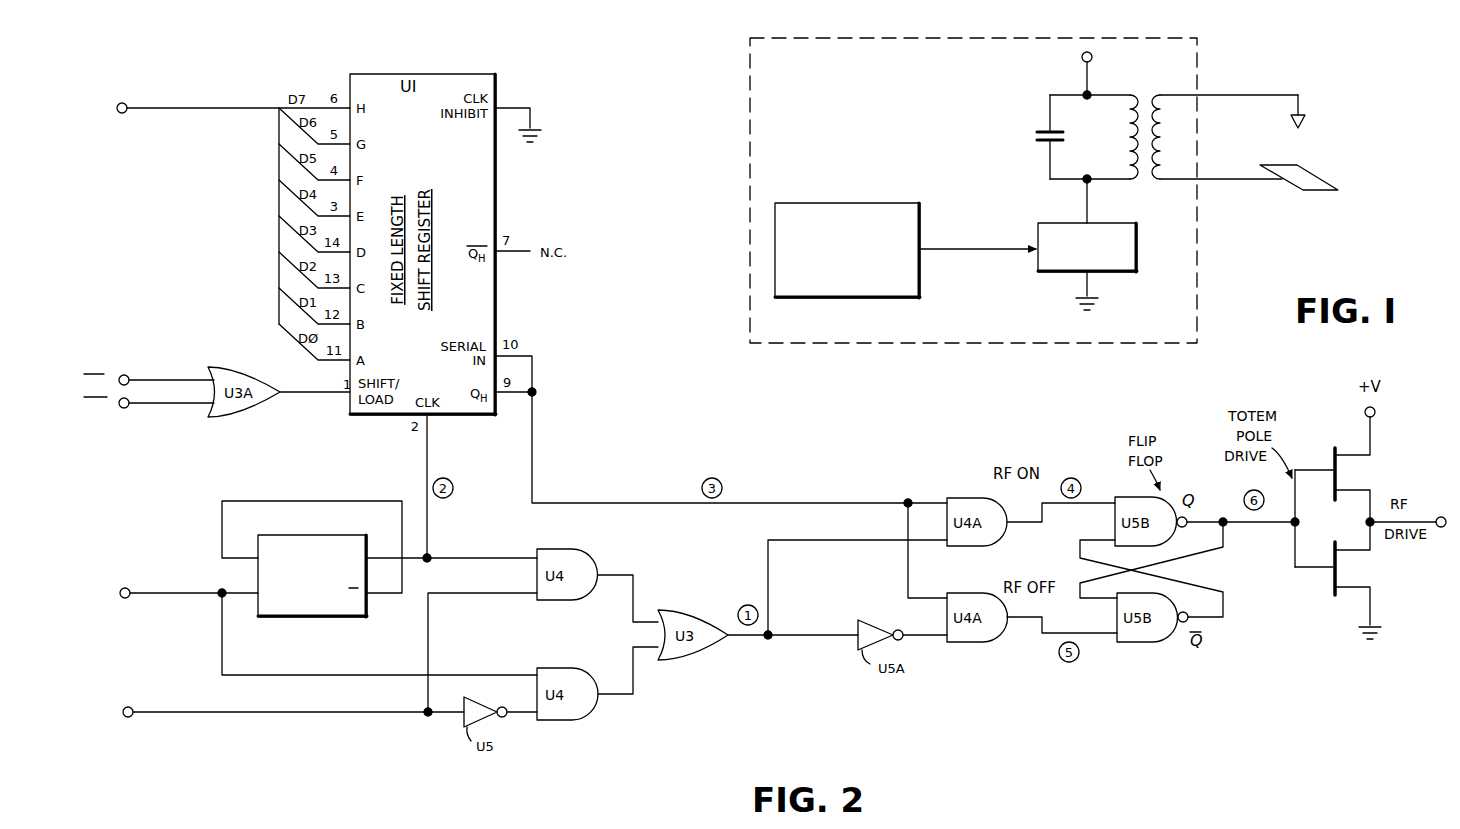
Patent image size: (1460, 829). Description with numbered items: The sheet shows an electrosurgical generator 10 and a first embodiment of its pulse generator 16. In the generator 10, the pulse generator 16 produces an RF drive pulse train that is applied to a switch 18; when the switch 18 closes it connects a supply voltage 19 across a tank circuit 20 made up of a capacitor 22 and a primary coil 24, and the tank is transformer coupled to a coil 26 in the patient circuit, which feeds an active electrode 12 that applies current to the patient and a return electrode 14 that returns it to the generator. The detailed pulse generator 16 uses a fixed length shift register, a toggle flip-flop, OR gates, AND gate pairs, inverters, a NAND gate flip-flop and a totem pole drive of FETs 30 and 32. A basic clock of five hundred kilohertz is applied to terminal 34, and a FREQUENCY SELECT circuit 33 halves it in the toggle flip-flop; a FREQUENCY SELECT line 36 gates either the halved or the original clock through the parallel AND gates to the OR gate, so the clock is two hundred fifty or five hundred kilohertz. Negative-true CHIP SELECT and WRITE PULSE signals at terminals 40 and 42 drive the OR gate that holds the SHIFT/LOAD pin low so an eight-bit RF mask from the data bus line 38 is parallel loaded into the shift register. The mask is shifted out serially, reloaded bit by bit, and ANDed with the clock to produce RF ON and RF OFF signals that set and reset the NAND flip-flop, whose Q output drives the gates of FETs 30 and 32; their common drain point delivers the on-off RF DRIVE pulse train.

In FIG. 1, the electrosurgical generator 10 is at (905, 345).
In FIG. 1, the active electrode 12 is at (1311, 122).
In FIG. 1, the return electrode 14 is at (1310, 178).
In FIG. 1, the pulse generator 16 is at (838, 213).
In FIG. 1, the switch 18 is at (1125, 248).
In FIG. 1, the supply voltage 19 is at (1082, 58).
In FIG. 1, the tank circuit 20 is at (1050, 131).
In FIG. 1, the capacitor 22 is at (1043, 125).
In FIG. 1, the primary coil 24 is at (1127, 130).
In FIG. 1, the coil 26 is at (1167, 127).
In FIG. 2, the FET 30 is at (1333, 460).
In FIG. 2, the FET 32 is at (1330, 575).
In FIG. 2, the FREQUENCY SELECT circuit 33 is at (460, 544).
In FIG. 2, the terminal 34 is at (125, 588).
In FIG. 2, the FREQUENCY SELECT line 36 is at (248, 714).
In FIG. 2, the data bus line 38 is at (203, 107).
In FIG. 2, the terminal 40 is at (128, 377).
In FIG. 2, the terminal 42 is at (127, 408).